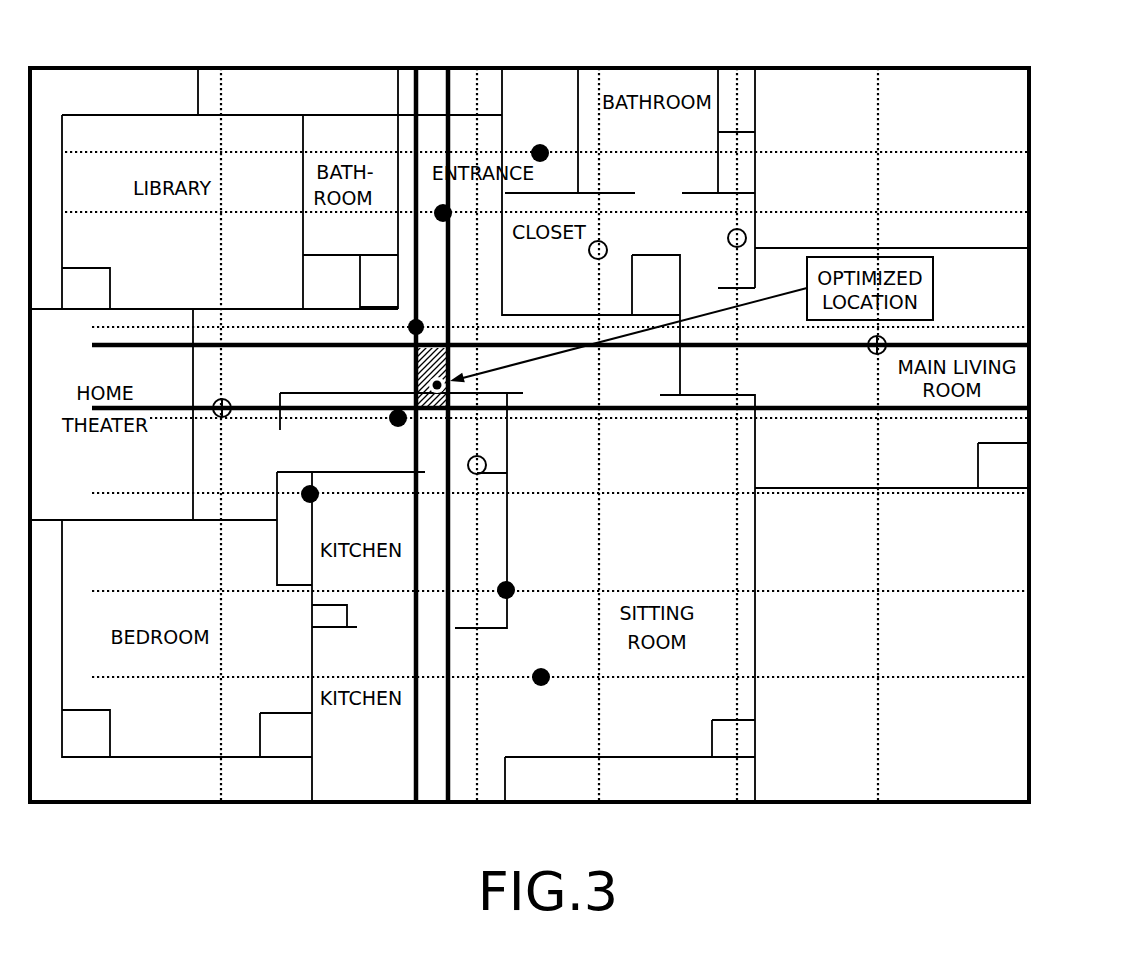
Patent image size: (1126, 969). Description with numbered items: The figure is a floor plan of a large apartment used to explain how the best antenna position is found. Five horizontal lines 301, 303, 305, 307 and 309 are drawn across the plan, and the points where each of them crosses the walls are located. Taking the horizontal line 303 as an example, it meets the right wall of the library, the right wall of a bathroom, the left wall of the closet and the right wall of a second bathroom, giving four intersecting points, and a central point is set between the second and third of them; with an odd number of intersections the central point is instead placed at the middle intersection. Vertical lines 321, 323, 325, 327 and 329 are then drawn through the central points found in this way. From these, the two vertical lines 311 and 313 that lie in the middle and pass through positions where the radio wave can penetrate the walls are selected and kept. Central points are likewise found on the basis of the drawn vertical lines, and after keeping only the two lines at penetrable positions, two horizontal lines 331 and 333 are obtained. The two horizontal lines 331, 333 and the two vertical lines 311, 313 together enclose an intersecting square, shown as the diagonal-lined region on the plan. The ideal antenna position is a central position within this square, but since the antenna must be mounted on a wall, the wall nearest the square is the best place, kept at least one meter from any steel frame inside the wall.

The horizontal line 301 is at (1029, 152).
The horizontal line 303 is at (1029, 212).
The horizontal line 305 is at (1029, 493).
The horizontal line 307 is at (1029, 591).
The horizontal line 309 is at (1029, 677).
The vertical line 311 is at (416, 64).
The vertical line 313 is at (452, 65).
The vertical line 321 is at (221, 802).
The vertical line 323 is at (477, 802).
The vertical line 325 is at (599, 802).
The vertical line 327 is at (737, 802).
The vertical line 329 is at (878, 802).
The horizontal line 331 is at (1029, 345).
The horizontal line 333 is at (1029, 408).